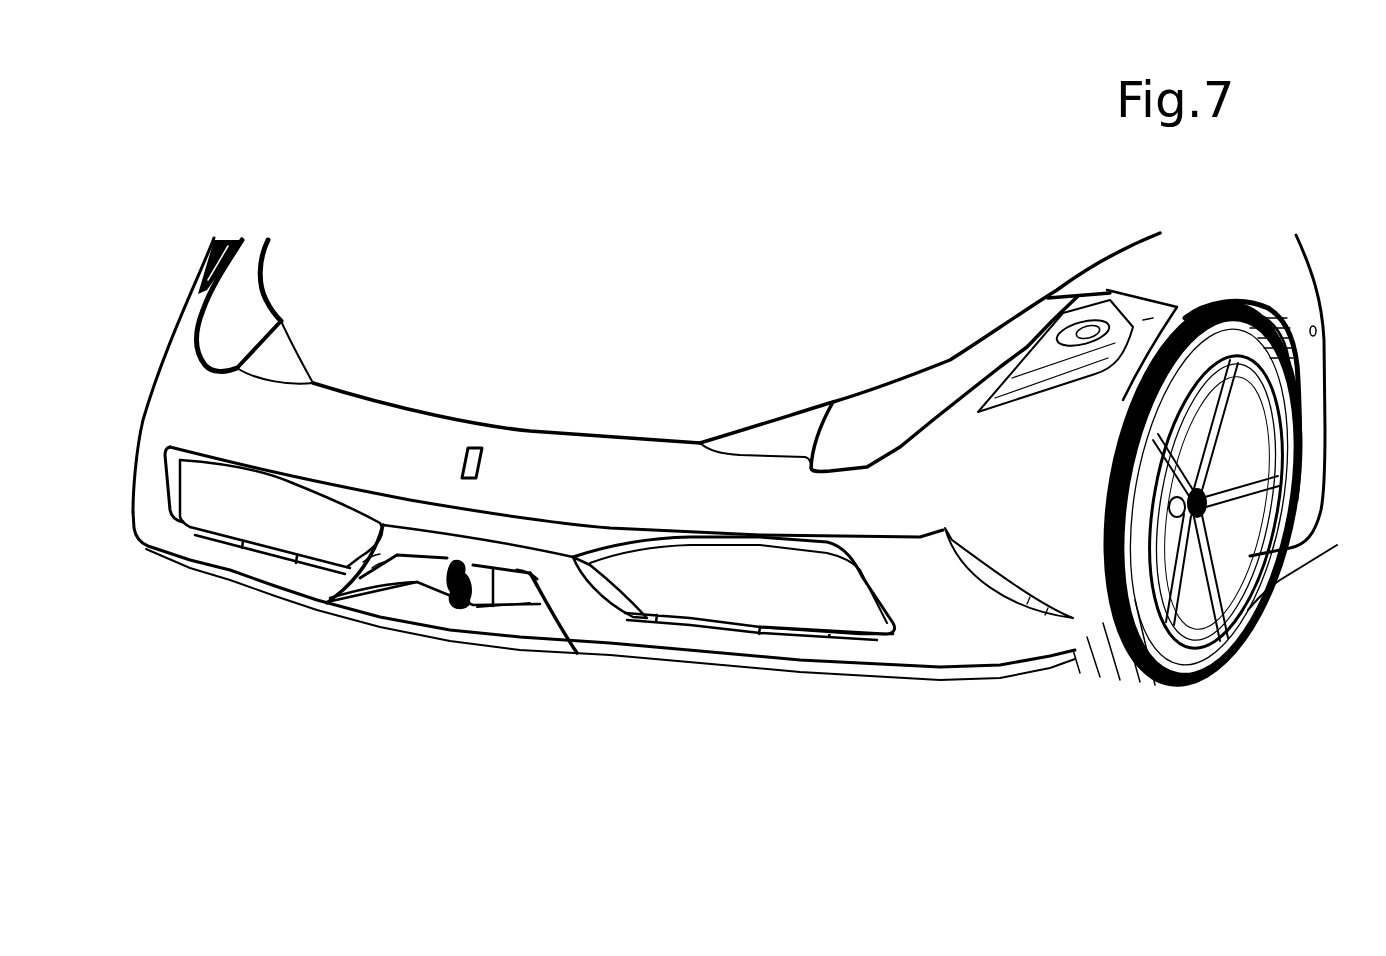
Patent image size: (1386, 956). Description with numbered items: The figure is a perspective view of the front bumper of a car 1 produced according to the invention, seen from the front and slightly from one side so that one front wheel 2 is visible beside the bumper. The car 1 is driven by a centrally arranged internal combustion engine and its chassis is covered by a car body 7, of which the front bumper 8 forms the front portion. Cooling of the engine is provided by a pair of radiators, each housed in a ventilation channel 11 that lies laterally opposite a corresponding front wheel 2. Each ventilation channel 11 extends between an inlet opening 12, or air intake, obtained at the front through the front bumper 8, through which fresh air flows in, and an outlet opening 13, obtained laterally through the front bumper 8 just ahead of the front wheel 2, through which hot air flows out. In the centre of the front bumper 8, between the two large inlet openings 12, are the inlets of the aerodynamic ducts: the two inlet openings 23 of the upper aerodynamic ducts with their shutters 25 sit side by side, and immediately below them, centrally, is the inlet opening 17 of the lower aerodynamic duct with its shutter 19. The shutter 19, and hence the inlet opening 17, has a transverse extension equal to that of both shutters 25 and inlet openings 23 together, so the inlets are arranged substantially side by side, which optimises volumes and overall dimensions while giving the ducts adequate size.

The car 1 is at (295, 94).
The front wheel 2 is at (1118, 675).
The car body 7 is at (651, 140).
The front bumper 8 is at (405, 430).
The ventilation channel 11 is at (265, 516).
The inlet opening 12 is at (198, 548).
The outlet opening 13 is at (1053, 352).
The inlet opening of the aerodynamic duct 17 is at (418, 615).
The shutter 19 is at (507, 607).
The inlet opening of the aerodynamic duct 23 is at (432, 545).
The shutter 25 is at (396, 572).